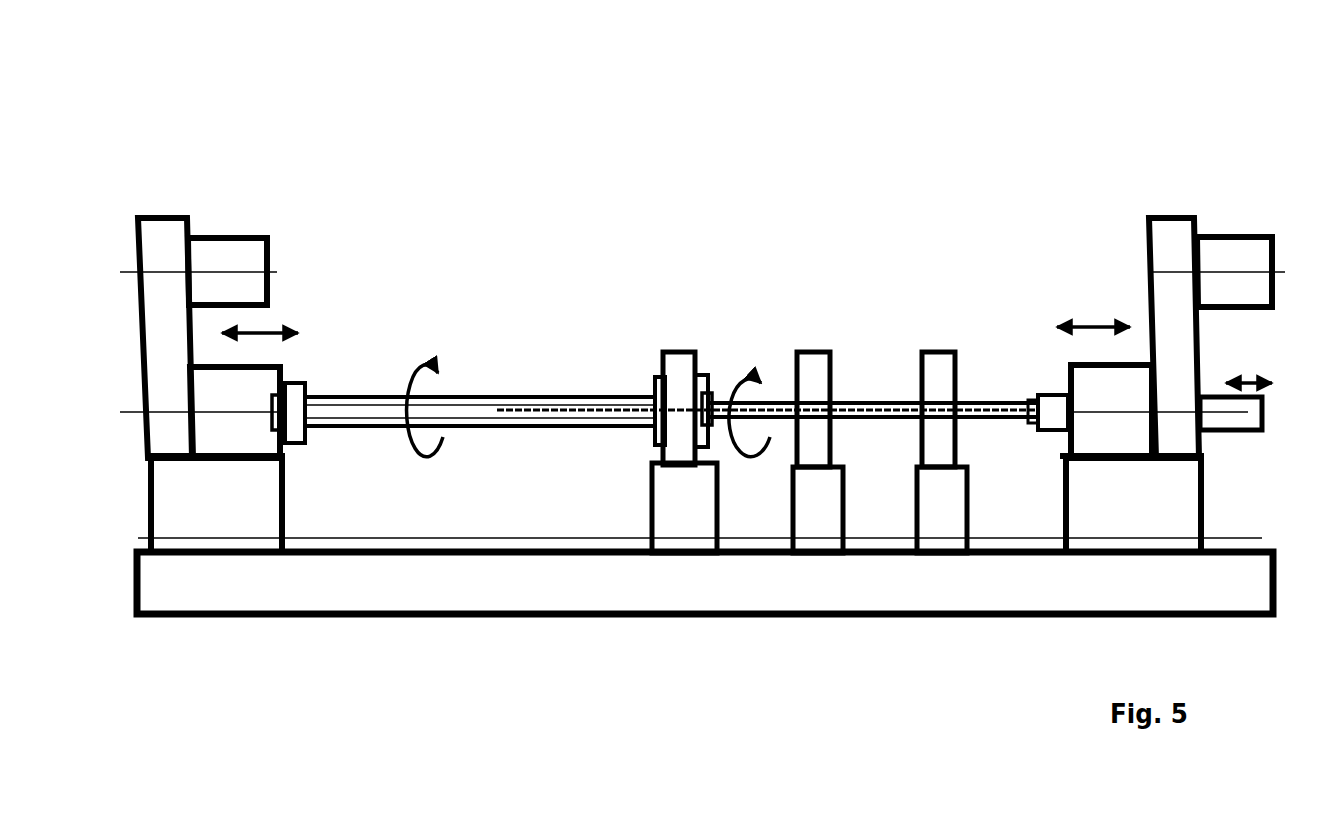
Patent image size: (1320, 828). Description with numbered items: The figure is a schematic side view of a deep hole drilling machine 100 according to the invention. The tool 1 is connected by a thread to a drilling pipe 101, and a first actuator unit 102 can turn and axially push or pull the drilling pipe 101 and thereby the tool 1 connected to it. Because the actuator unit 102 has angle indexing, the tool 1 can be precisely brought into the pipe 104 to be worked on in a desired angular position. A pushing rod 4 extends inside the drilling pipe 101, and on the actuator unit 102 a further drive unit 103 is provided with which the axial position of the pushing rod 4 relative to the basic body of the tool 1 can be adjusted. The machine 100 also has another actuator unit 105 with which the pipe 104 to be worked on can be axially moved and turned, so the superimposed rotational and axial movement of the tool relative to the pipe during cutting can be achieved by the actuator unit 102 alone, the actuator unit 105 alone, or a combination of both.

The deep hole drilling machine 100 is at (704, 162).
The actuator unit 105 is at (170, 317).
The pipe 104 is at (367, 398).
The tool 1 is at (520, 403).
The drilling pipe 101 is at (872, 401).
The pushing rod 4 is at (897, 417).
The first actuator unit 102 is at (1173, 295).
The further drive unit 103 is at (1227, 420).